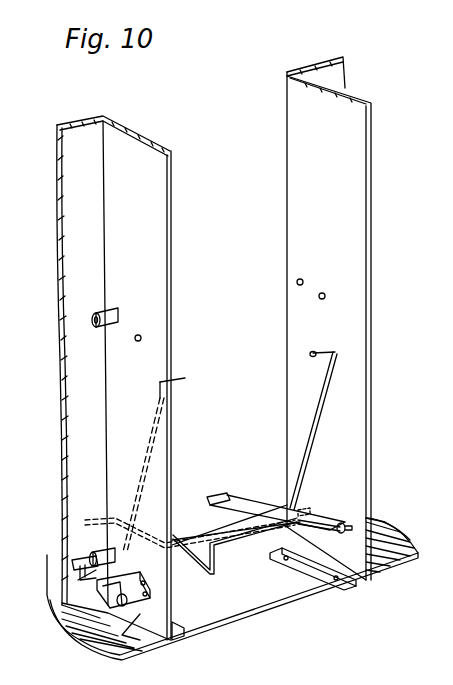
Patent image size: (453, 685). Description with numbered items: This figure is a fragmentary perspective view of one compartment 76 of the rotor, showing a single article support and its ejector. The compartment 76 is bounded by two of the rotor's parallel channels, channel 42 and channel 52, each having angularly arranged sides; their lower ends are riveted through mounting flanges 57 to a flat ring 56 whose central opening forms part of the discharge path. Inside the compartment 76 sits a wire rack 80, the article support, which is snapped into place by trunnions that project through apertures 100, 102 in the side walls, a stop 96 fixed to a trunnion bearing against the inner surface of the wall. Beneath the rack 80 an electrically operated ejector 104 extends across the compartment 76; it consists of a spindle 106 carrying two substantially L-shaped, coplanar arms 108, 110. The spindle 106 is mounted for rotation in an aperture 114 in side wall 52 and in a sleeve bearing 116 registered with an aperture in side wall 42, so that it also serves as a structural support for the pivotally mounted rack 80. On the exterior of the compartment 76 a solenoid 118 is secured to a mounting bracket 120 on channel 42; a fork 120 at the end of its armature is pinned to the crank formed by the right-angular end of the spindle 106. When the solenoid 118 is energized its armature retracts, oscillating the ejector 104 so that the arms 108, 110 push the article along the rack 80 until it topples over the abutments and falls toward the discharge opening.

The channel 42 is at (128, 148).
The channel 52 is at (360, 200).
The flat ring 56 is at (388, 536).
The mounting flange 57 is at (310, 580).
The compartment 76 is at (250, 622).
The wire rack 80 is at (250, 500).
The stop 96 is at (318, 520).
The aperture 100 is at (342, 518).
The aperture 102 is at (170, 578).
The ejector 104 is at (74, 556).
The spindle 106 is at (187, 538).
The arm 108 is at (312, 406).
The arm 110 is at (165, 420).
The aperture 114 is at (306, 506).
The sleeve bearing 116 is at (98, 548).
The solenoid 118 is at (115, 600).
The mounting bracket 120 is at (70, 595).